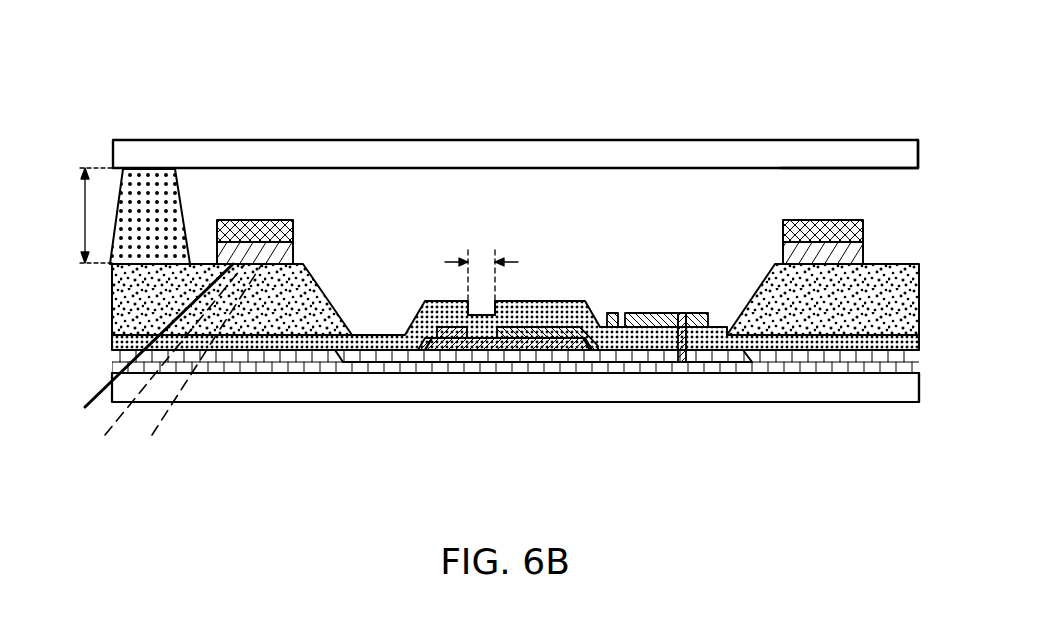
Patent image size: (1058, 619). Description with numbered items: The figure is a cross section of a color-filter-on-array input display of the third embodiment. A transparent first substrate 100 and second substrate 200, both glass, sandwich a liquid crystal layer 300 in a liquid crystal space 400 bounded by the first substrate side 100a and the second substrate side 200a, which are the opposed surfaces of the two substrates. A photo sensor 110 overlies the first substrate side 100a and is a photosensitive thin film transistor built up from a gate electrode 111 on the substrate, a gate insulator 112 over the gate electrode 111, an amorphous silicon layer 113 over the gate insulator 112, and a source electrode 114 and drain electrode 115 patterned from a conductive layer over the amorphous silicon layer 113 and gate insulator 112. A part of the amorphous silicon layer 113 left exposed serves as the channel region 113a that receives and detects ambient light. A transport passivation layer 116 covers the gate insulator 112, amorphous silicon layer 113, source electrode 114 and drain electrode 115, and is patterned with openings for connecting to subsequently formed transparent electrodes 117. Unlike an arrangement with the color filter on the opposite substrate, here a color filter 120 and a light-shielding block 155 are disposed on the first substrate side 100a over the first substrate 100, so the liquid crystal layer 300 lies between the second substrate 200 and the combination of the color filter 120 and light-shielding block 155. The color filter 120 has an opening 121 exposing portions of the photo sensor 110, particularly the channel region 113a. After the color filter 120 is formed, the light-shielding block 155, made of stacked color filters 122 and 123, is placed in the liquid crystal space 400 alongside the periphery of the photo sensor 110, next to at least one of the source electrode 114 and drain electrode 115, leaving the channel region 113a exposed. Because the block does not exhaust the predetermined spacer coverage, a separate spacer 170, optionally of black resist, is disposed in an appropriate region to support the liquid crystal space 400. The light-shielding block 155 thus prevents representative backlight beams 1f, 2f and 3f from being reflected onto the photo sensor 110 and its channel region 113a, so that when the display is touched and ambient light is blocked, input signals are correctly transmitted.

The first substrate 100 is at (830, 393).
The first substrate side 100a is at (921, 377).
The photo sensor 110 is at (543, 374).
The gate electrode 111 is at (548, 356).
The gate insulator 112 is at (490, 345).
The amorphous silicon layer 113 is at (560, 333).
The channel region 113a is at (481, 272).
The source electrode 114 is at (626, 320).
The drain electrode 115 is at (443, 333).
The transport passivation layer 116 is at (418, 338).
The transparent electrodes 117 is at (711, 391).
The color filter 120 is at (303, 315).
The opening 121 is at (757, 304).
The color filter 122 is at (277, 253).
The color filter 123 is at (285, 228).
The light-shielding block 155 is at (540, 151).
The spacer 170 is at (152, 180).
The second substrate 200 is at (459, 140).
The second substrate side 200a is at (921, 167).
The liquid crystal layer 300 is at (897, 227).
The liquid crystal space 400 is at (89, 215).
The light beam 1f is at (92, 406).
The light beam 2f is at (124, 414).
The light beam 3f is at (166, 416).